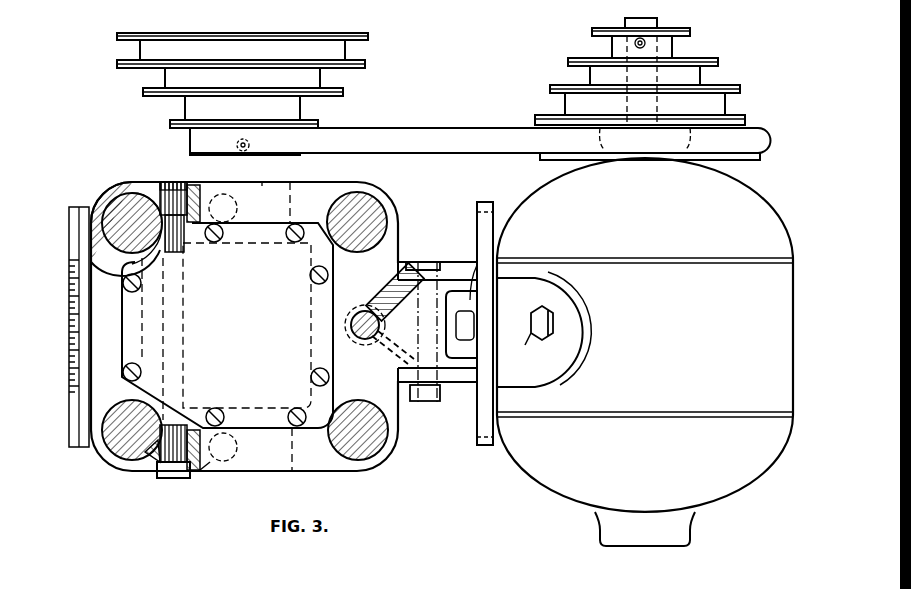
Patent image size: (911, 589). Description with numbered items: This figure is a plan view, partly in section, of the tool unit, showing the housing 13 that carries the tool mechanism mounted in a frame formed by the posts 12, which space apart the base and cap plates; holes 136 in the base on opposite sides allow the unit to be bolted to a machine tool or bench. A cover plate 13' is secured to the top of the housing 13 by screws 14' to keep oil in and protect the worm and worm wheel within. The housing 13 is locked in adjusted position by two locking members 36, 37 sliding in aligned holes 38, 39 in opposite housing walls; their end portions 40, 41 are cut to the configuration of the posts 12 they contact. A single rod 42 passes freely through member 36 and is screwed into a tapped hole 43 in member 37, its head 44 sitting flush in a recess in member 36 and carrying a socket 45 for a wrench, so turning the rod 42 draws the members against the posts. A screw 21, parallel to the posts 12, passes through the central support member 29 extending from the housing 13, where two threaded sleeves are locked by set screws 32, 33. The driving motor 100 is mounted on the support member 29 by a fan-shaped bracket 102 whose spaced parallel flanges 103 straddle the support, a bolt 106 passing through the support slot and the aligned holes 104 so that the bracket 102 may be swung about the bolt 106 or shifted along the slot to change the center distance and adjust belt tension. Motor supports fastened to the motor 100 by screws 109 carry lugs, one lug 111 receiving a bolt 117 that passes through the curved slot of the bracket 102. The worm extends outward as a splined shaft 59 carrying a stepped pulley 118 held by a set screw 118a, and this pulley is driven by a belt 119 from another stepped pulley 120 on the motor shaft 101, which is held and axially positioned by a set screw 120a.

The posts 12 is at (118, 200).
The housing 13 is at (283, 317).
The cover plate 13' is at (342, 356).
The screws 14' is at (226, 326).
The screw 21 is at (350, 325).
The central support member 29 is at (485, 268).
The set screw 32 is at (383, 292).
The set screw 33 is at (392, 362).
The locking member 36 is at (206, 470).
The locking member 37 is at (188, 180).
The hole 38 is at (152, 466).
The hole 39 is at (140, 279).
The end portion 40 is at (122, 470).
The end portion 41 is at (163, 184).
The rod 42 is at (182, 244).
The tapped hole 43 is at (198, 186).
The head 44 is at (196, 472).
The socket 45 is at (172, 480).
The splined shaft 59 is at (262, 183).
The driving motor 100 is at (563, 458).
The motor shaft 101 is at (688, 24).
The bracket 102 is at (478, 430).
The flanges 103 is at (448, 274).
The holes 104 is at (412, 268).
The bolt 106 is at (428, 350).
The screws 109 is at (553, 320).
The lug 111 is at (505, 300).
The bolt 117 is at (525, 344).
The stepped pulley 118 is at (357, 40).
The set screw 118a is at (238, 146).
The belt 119 is at (395, 148).
The stepped pulley 120 is at (595, 30).
The set screw 120a is at (625, 43).
The holes 136 is at (232, 210).